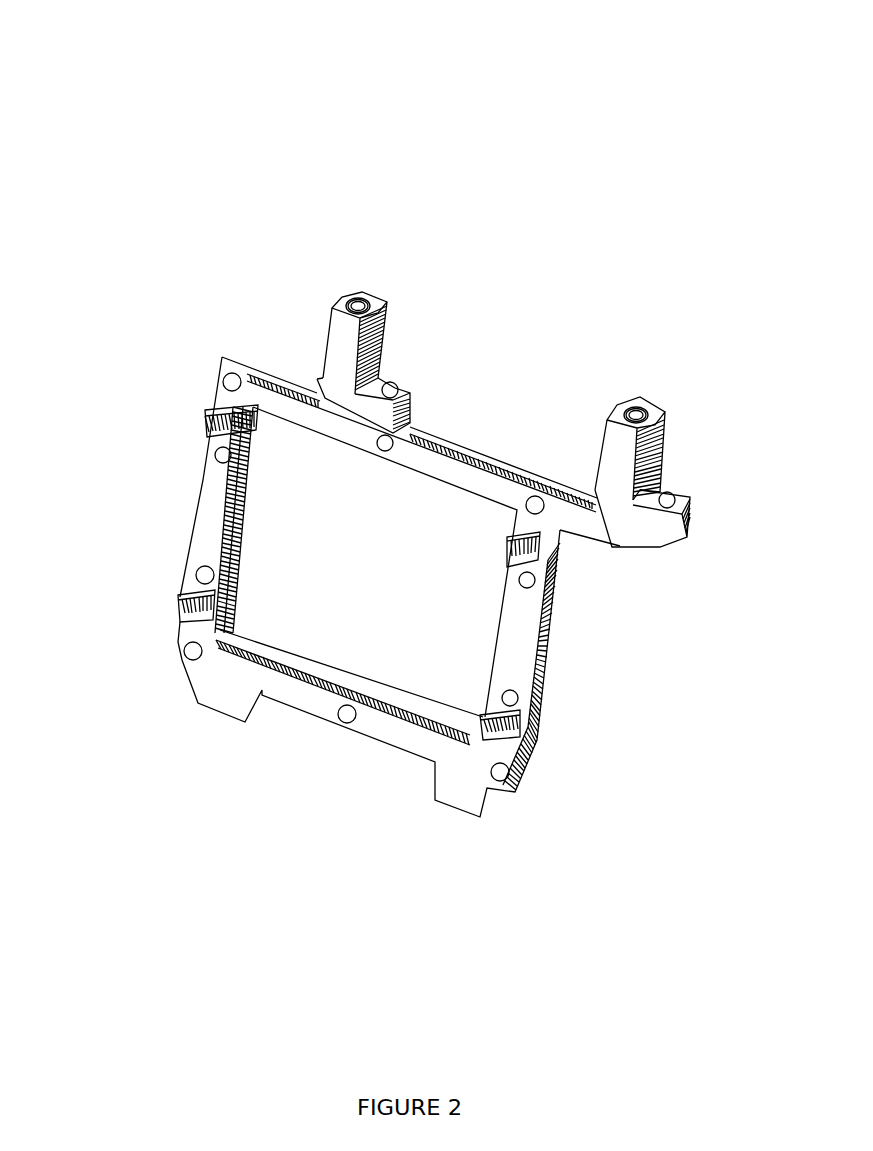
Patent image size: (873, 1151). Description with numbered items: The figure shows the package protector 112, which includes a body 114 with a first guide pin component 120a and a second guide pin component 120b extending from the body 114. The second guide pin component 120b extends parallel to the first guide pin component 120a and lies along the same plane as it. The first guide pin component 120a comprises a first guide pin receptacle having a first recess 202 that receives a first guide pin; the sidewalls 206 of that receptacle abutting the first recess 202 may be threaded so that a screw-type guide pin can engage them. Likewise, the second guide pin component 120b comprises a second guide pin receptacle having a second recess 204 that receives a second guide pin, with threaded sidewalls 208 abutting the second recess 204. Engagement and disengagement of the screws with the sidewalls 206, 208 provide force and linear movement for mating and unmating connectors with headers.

The package protector 112 is at (96, 80).
The body 114 is at (560, 656).
The first guide pin component 120a is at (338, 352).
The second guide pin component 120b is at (647, 470).
The first recess 202 is at (350, 268).
The second recess 204 is at (630, 380).
The sidewalls of the first guide pin receptacle 206 is at (362, 307).
The sidewalls of the second guide pin receptacle 208 is at (643, 412).